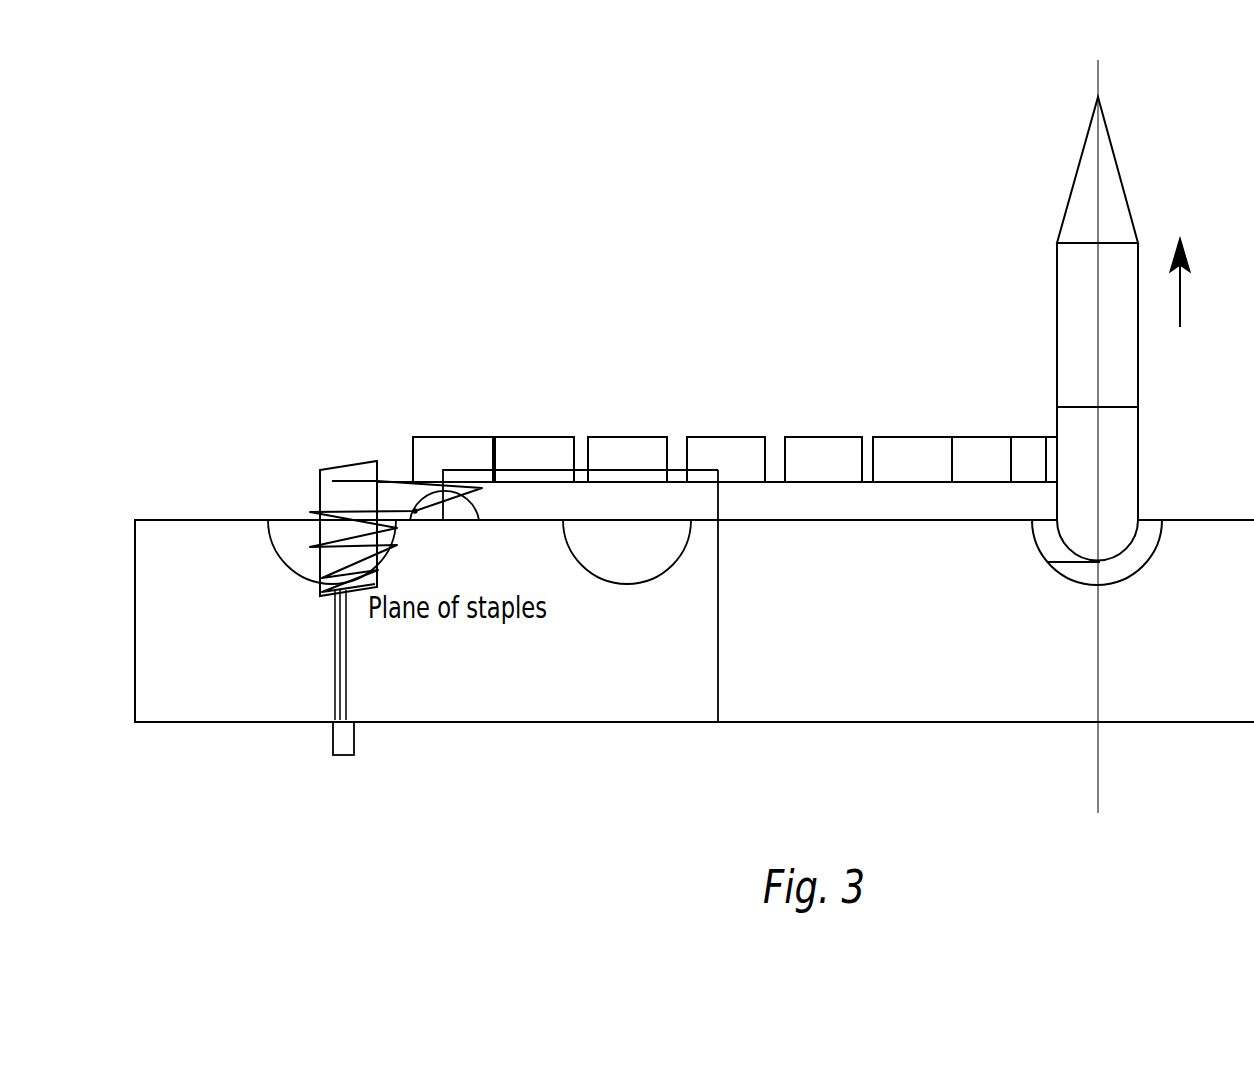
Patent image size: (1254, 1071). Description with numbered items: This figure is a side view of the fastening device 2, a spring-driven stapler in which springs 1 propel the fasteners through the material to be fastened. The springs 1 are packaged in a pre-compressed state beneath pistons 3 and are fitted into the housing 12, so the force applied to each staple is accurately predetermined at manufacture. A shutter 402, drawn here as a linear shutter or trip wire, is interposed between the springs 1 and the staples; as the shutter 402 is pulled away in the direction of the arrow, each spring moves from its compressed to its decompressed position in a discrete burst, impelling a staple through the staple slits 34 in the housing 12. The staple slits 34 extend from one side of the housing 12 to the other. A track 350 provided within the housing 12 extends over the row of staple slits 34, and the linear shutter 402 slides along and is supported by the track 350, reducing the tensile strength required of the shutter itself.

The springs 1 is at (345, 465).
The fastening device 2 is at (691, 338).
The pistons 3 is at (443, 434).
The housing 12 is at (798, 641).
The staple slits 34 is at (321, 667).
The track 350 is at (1140, 581).
The shutter 402 is at (1124, 183).